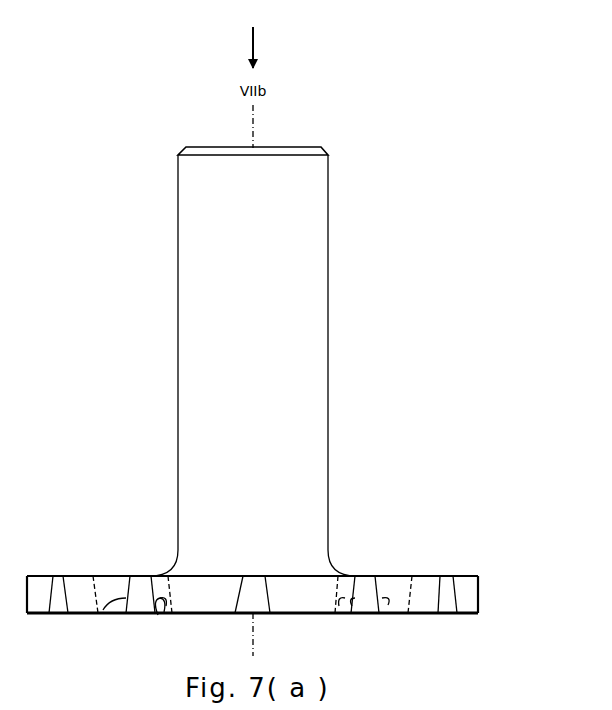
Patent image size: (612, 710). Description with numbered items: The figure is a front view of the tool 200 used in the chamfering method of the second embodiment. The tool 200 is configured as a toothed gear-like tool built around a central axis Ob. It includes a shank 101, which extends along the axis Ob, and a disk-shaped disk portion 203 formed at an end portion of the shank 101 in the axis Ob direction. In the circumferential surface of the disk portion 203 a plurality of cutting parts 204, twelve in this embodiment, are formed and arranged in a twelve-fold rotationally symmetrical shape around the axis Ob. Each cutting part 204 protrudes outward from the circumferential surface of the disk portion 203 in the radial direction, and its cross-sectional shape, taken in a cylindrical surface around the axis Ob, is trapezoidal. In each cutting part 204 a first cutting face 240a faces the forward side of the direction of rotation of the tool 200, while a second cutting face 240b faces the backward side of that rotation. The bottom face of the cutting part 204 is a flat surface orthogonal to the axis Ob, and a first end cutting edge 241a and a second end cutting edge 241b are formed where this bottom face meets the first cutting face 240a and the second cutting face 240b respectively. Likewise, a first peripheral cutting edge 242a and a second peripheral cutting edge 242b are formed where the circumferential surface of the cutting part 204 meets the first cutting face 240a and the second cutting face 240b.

The tool 200 is at (413, 108).
The shank 101 is at (312, 319).
The disk portion 203 is at (292, 592).
The cutting part 204 is at (121, 591).
The first cutting face 240a is at (343, 592).
The second cutting face 240b is at (162, 592).
The first end cutting edge 241a is at (337, 613).
The second end cutting edge 241b is at (170, 600).
The first peripheral cutting edge 242a is at (103, 610).
The second peripheral cutting edge 242b is at (158, 615).
The axis Ob is at (256, 118).